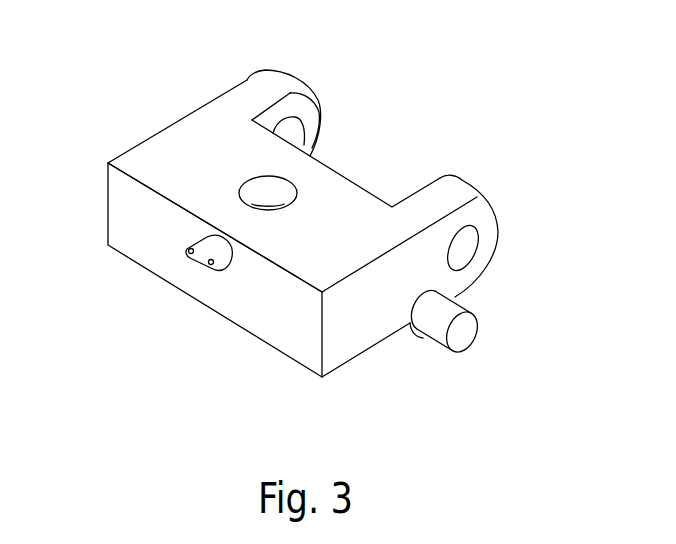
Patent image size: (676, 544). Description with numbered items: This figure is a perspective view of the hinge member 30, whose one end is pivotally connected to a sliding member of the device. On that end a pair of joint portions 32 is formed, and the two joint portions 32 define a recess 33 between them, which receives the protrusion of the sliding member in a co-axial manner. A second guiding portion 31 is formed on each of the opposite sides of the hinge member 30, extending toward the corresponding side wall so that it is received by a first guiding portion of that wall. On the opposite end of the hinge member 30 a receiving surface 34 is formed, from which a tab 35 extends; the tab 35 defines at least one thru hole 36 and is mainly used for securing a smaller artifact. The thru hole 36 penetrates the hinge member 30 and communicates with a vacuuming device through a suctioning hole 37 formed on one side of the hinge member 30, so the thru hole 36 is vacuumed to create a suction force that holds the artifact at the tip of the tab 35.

The hinge member 30 is at (165, 150).
The second guiding portion 31 is at (461, 332).
The joint portion 32 is at (273, 92).
The recess 33 is at (358, 153).
The receiving surface 34 is at (273, 322).
The tab 35 is at (202, 258).
The thru hole 36 is at (187, 249).
The suctioning hole 37 is at (258, 197).